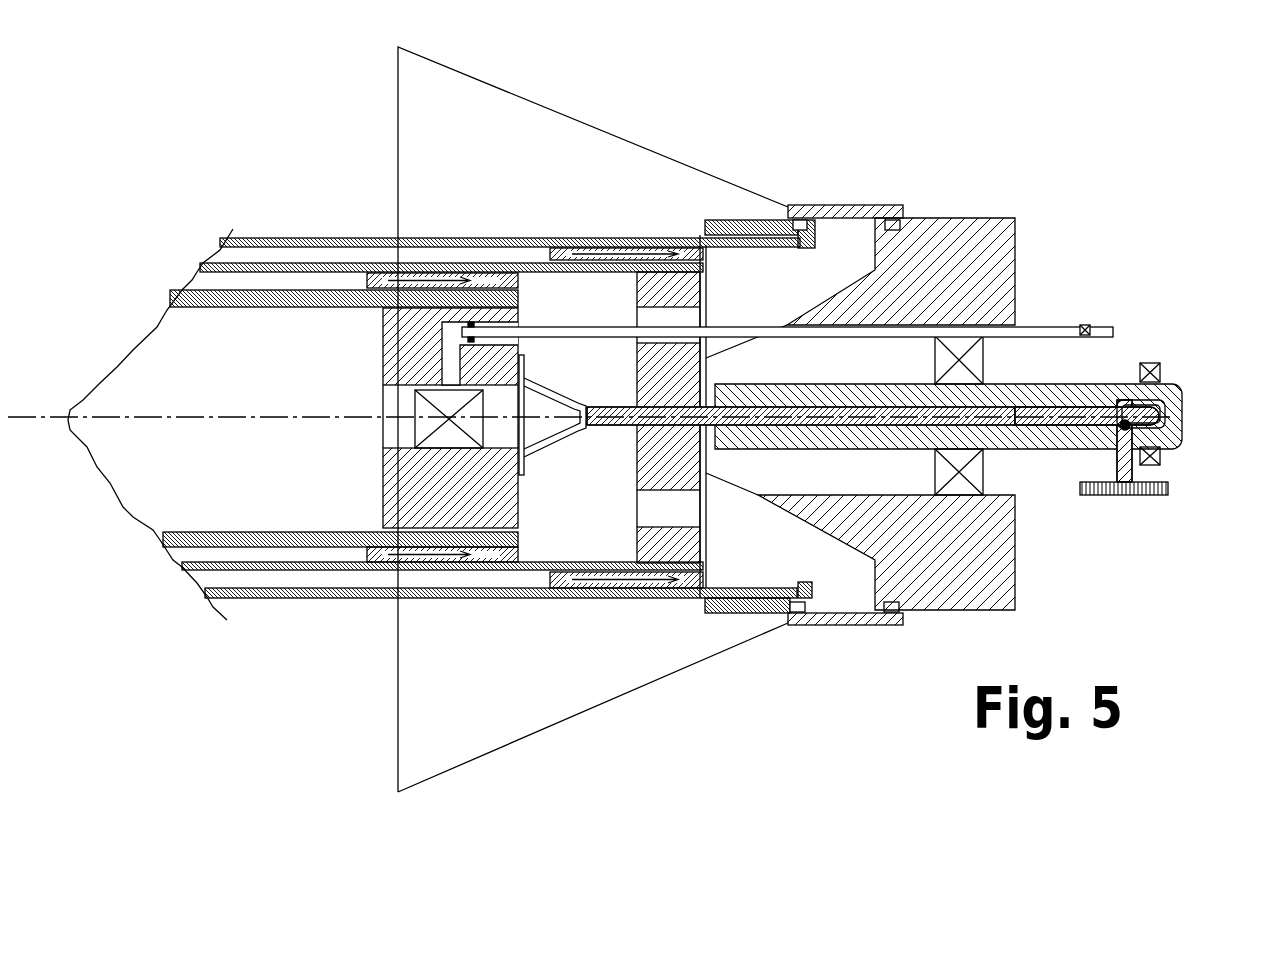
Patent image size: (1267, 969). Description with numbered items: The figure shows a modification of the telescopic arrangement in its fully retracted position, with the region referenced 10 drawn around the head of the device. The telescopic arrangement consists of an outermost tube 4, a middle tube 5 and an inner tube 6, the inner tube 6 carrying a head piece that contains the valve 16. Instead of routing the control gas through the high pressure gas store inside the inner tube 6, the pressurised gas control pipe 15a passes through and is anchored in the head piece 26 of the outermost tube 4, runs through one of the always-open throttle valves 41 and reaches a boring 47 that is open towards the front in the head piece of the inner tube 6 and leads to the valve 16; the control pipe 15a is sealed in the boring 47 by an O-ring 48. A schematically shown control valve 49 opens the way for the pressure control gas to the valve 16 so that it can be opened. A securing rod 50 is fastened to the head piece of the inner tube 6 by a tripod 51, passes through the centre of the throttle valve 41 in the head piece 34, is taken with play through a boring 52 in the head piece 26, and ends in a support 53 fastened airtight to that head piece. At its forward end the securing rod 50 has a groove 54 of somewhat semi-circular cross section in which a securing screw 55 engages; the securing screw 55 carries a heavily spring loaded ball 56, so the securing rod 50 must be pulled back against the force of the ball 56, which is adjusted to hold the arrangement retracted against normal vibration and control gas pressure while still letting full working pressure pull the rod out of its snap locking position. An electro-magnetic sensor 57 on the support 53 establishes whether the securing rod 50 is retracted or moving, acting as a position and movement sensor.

The outermost tube 4 is at (277, 243).
The middle tube 5 is at (238, 270).
The inner tube 6 is at (213, 312).
The protective cover 10 is at (472, 103).
The pressurised gas control pipe 15a is at (760, 332).
The valve 16 is at (412, 470).
The head piece of the outermost tube 26 is at (977, 578).
The head piece 34 is at (685, 242).
The always-open throttle valve 41 is at (673, 512).
The boring 47 is at (521, 328).
The O-ring 48 is at (463, 327).
The control valve 49 is at (1093, 322).
The securing rod 50 is at (1030, 415).
The tripod 51 is at (488, 515).
The boring 52 is at (875, 406).
The support 53 is at (1080, 382).
The groove 54 is at (1117, 408).
The securing screw 55 is at (1168, 487).
The spring loaded ball 56 is at (1157, 415).
The electro-magnetic sensor 57 is at (1162, 365).